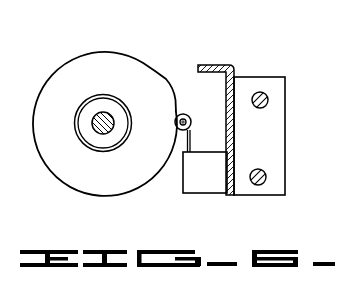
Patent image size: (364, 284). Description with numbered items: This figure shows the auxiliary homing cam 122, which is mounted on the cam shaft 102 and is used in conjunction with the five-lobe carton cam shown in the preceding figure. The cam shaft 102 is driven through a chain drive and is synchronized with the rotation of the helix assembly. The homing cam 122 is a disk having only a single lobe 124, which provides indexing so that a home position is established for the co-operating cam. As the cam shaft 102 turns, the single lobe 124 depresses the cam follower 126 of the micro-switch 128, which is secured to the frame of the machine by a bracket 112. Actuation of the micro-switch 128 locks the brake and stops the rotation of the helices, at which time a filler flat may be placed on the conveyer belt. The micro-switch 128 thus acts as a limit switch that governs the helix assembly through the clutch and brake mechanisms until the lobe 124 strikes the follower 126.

The cam shaft 102 is at (99, 122).
The bracket 112 is at (268, 148).
The homing cam 122 is at (139, 78).
The single lobe 124 is at (171, 74).
The cam follower 126 is at (198, 112).
The micro-switch 128 is at (218, 181).